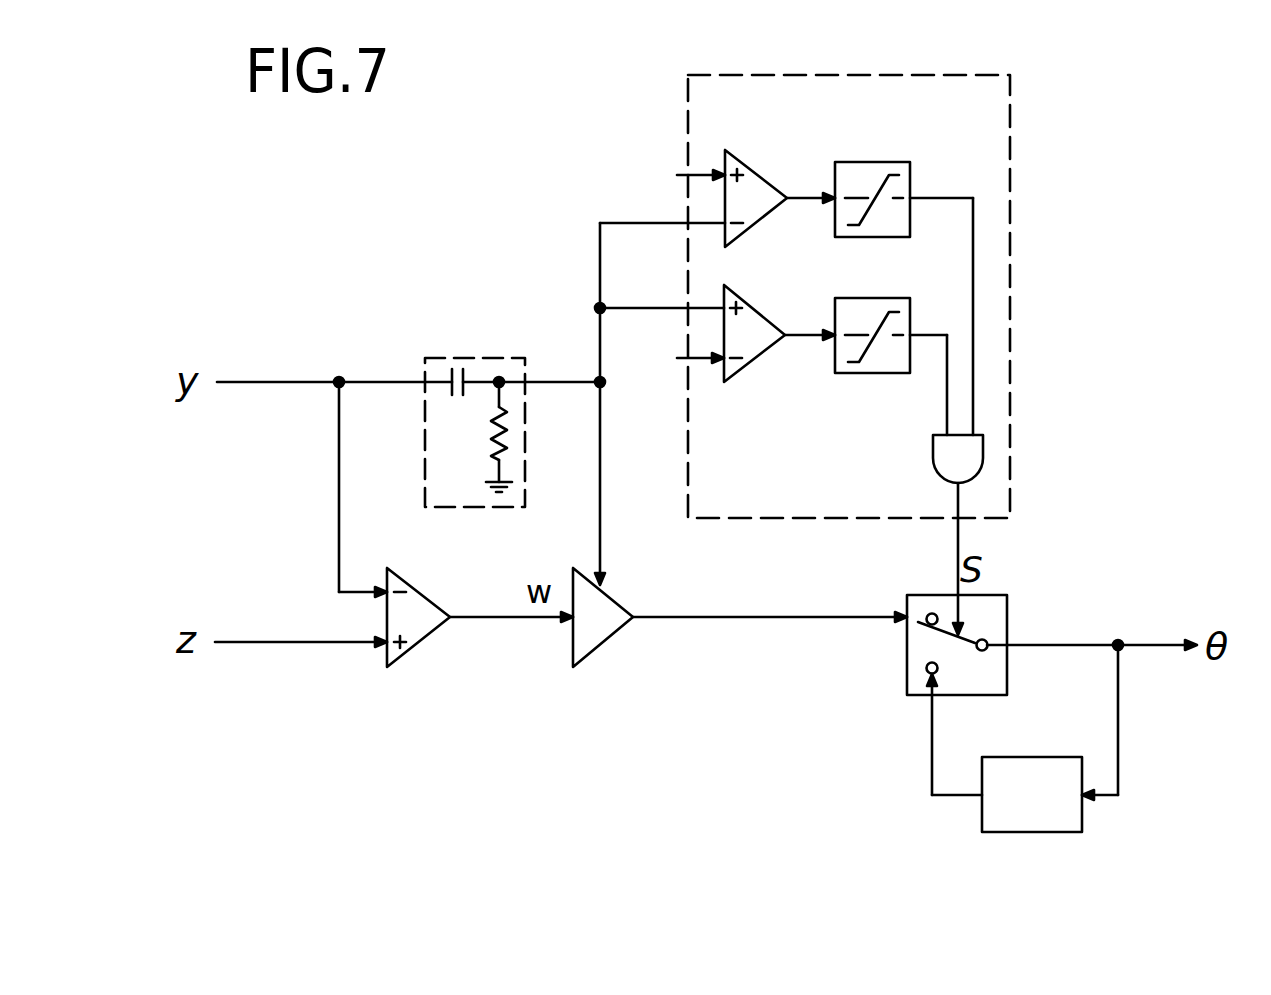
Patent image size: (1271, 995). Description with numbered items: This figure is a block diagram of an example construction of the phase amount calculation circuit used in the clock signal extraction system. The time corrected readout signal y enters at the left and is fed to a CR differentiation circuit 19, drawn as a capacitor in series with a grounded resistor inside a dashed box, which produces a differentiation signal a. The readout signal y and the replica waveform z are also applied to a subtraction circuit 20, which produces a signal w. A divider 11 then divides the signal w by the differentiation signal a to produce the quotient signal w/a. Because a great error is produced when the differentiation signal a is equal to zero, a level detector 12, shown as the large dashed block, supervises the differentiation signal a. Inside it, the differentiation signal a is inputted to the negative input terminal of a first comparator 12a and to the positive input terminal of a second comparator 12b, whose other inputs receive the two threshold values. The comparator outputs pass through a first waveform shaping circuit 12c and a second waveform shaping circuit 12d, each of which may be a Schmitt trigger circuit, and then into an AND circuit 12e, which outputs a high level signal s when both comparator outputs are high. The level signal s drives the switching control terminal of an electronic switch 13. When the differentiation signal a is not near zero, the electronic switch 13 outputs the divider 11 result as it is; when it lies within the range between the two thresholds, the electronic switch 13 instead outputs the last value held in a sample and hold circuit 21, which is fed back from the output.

The divider 11 is at (590, 660).
The level detector 12 is at (1010, 274).
The first comparator 12a is at (763, 183).
The second comparator 12b is at (758, 363).
The first waveform shaping circuit 12c is at (900, 162).
The second waveform shaping circuit 12d is at (861, 374).
The AND circuit 12e is at (934, 456).
The electronic switch 13 is at (907, 647).
The CR differentiation circuit 19 is at (482, 357).
The subtraction circuit 20 is at (428, 648).
The sample and hold circuit 21 is at (1043, 833).